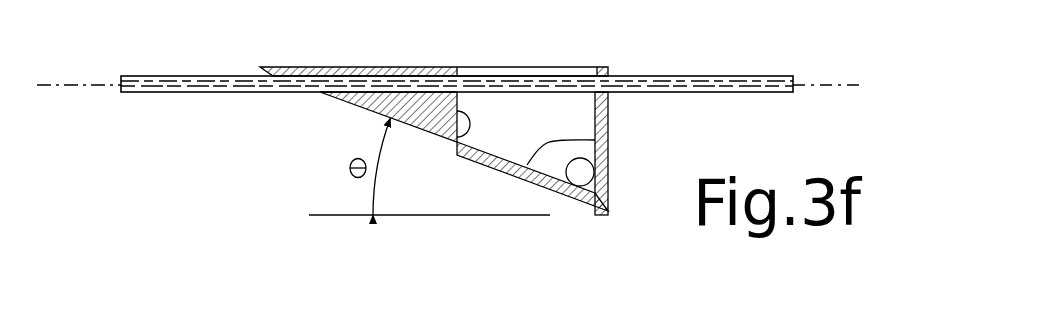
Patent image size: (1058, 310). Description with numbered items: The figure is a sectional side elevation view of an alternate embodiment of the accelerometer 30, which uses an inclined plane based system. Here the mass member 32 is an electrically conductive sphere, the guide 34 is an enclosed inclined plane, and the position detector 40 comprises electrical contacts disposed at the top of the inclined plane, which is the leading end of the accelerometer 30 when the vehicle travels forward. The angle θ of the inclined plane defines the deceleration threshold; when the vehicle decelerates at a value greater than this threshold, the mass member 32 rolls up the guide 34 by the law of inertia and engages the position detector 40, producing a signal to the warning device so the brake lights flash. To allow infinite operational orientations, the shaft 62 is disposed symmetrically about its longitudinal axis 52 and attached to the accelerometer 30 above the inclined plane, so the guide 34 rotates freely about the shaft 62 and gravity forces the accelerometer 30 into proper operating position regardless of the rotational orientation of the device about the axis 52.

The accelerometer 30 is at (117, 57).
The shaft 62 is at (687, 76).
The guide 34 is at (608, 133).
The mass member 32 is at (580, 174).
The position detector 40 is at (463, 126).
The axis 52 is at (838, 85).